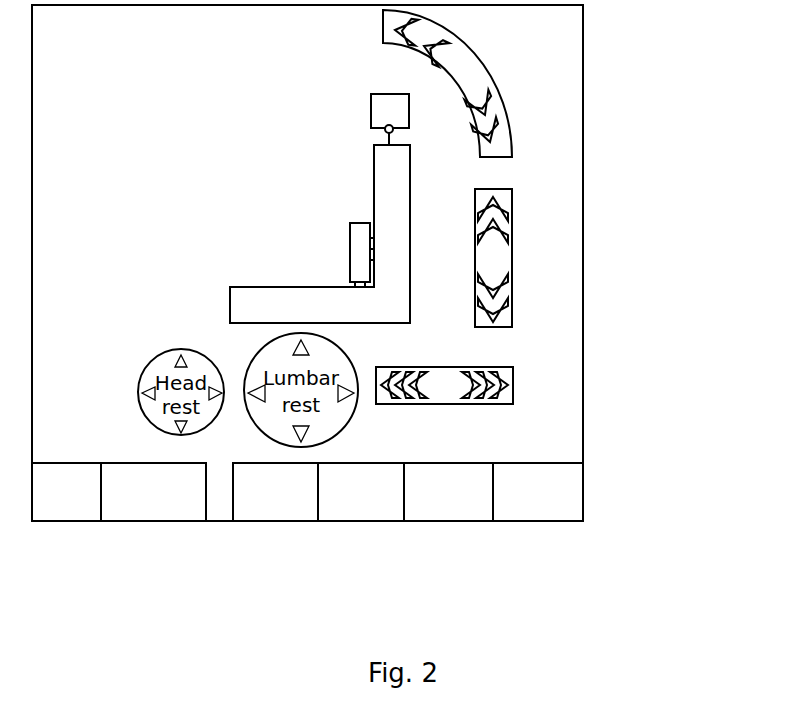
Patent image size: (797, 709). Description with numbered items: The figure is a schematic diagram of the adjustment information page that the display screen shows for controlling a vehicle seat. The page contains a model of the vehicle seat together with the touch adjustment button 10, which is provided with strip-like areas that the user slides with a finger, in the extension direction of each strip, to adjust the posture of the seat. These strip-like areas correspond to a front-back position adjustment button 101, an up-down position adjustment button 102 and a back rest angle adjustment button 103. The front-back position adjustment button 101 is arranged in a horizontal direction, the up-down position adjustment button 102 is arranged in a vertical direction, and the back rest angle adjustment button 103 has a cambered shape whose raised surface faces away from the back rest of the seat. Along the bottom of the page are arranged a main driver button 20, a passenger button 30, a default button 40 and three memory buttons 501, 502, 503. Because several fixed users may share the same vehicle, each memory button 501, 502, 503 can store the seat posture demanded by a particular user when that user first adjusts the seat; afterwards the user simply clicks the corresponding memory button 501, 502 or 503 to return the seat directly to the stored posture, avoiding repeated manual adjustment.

The touch adjustment button 10 is at (570, 207).
The front-back position adjustment button 101 is at (524, 385).
The up-down position adjustment button 102 is at (512, 260).
The back rest angle adjustment button 103 is at (487, 72).
The main driver button 20 is at (78, 521).
The passenger button 30 is at (148, 521).
The default button 40 is at (282, 521).
The memory button 501 is at (371, 521).
The memory button 502 is at (457, 521).
The memory button 503 is at (542, 521).